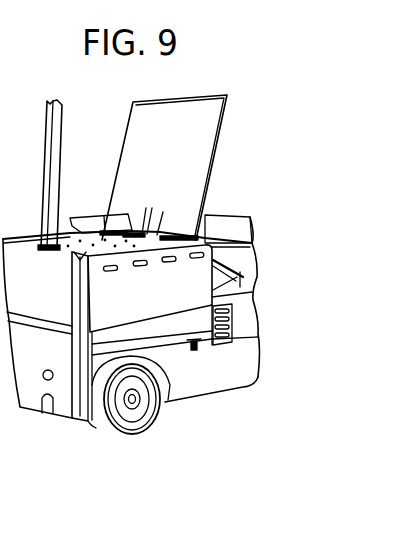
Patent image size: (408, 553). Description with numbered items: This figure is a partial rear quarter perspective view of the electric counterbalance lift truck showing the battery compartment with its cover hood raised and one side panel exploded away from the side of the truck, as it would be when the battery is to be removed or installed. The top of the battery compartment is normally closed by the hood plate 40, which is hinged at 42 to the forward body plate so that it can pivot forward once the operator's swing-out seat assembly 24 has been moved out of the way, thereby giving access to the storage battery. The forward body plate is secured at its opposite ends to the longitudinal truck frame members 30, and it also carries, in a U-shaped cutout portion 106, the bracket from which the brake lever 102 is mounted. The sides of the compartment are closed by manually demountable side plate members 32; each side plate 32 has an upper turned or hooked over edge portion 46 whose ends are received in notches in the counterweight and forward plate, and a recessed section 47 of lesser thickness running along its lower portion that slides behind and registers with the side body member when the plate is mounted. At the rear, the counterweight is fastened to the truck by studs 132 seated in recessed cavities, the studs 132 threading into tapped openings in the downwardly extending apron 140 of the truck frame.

The swing-out seat assembly 24 is at (88, 196).
The longitudinal truck frame member 30 is at (248, 322).
The side plate member 32 is at (159, 298).
The hood plate 40 is at (222, 129).
The hinge 42 is at (118, 230).
The hooked over edge portion 46 is at (83, 264).
The recessed section 47 is at (195, 346).
The lever 102 is at (143, 233).
The U-shaped cutout portion 106 is at (156, 235).
The stud 132 is at (44, 381).
The apron 140 is at (88, 417).